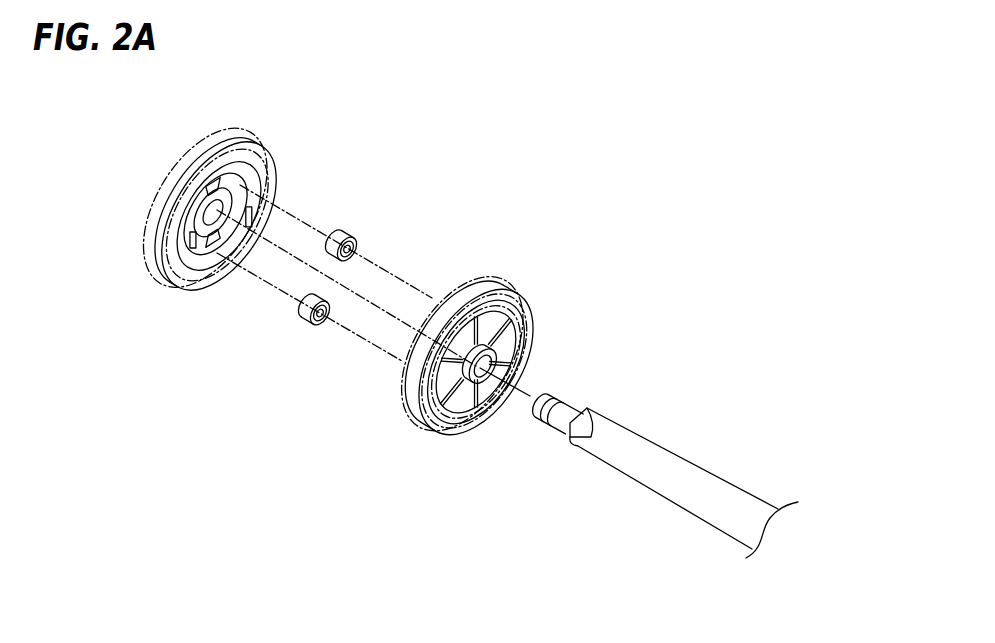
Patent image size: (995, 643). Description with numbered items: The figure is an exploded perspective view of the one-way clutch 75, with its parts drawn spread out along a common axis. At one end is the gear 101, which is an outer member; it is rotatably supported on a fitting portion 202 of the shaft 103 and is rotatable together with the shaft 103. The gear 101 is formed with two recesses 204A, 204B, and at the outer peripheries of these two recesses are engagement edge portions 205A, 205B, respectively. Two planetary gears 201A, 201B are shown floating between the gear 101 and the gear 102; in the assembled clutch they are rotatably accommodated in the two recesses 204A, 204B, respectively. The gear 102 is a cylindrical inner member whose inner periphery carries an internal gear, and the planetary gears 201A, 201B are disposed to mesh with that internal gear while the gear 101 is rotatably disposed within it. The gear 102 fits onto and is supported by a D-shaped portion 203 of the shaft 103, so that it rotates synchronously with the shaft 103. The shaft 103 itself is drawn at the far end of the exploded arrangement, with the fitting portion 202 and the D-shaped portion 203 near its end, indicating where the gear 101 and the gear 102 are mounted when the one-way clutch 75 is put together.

The one-way clutch 75 is at (437, 213).
The gear 101 is at (158, 184).
The gear 102 is at (407, 407).
The shaft 103 is at (675, 471).
The planetary gear 201A is at (337, 235).
The planetary gear 201B is at (308, 312).
The fitting portion 202 is at (557, 418).
The D-shaped portion 203 is at (590, 413).
The recess 204A is at (262, 146).
The recess 204B is at (198, 240).
The engagement edge portion 205A is at (223, 173).
The engagement edge portion 205B is at (190, 258).